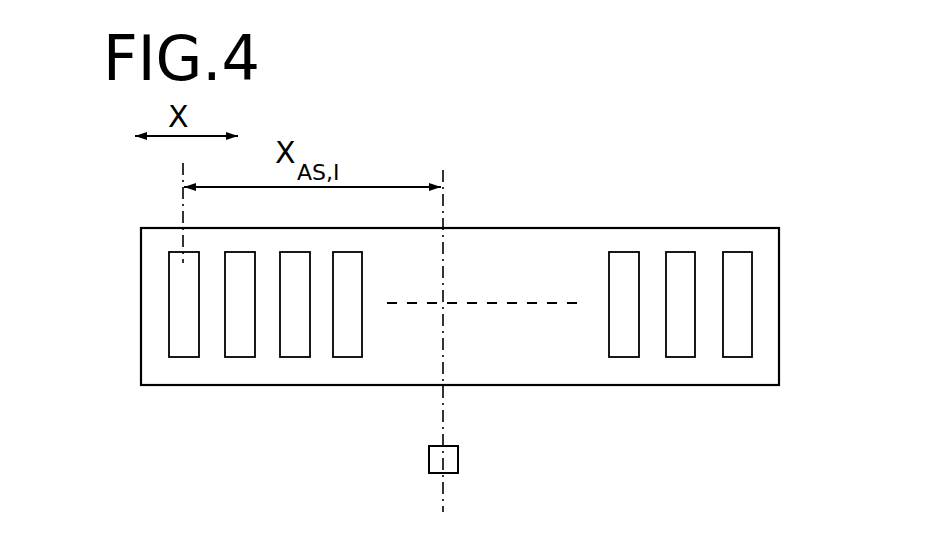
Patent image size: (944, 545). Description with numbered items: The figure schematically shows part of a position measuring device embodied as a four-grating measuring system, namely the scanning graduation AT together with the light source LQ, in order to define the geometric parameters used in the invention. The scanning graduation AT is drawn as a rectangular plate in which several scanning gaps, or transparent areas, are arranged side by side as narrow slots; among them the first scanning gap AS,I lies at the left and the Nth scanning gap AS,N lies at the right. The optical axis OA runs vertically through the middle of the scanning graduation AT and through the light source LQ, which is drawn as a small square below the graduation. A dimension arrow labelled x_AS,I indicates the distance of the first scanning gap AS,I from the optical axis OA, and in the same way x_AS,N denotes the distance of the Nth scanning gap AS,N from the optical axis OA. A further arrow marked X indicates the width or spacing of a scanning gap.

The scanning graduation AT is at (788, 340).
The first scanning gap AS,I is at (185, 323).
The Nth scanning gap AS,N is at (735, 272).
The optical axis OA is at (443, 213).
The light source LQ is at (437, 460).